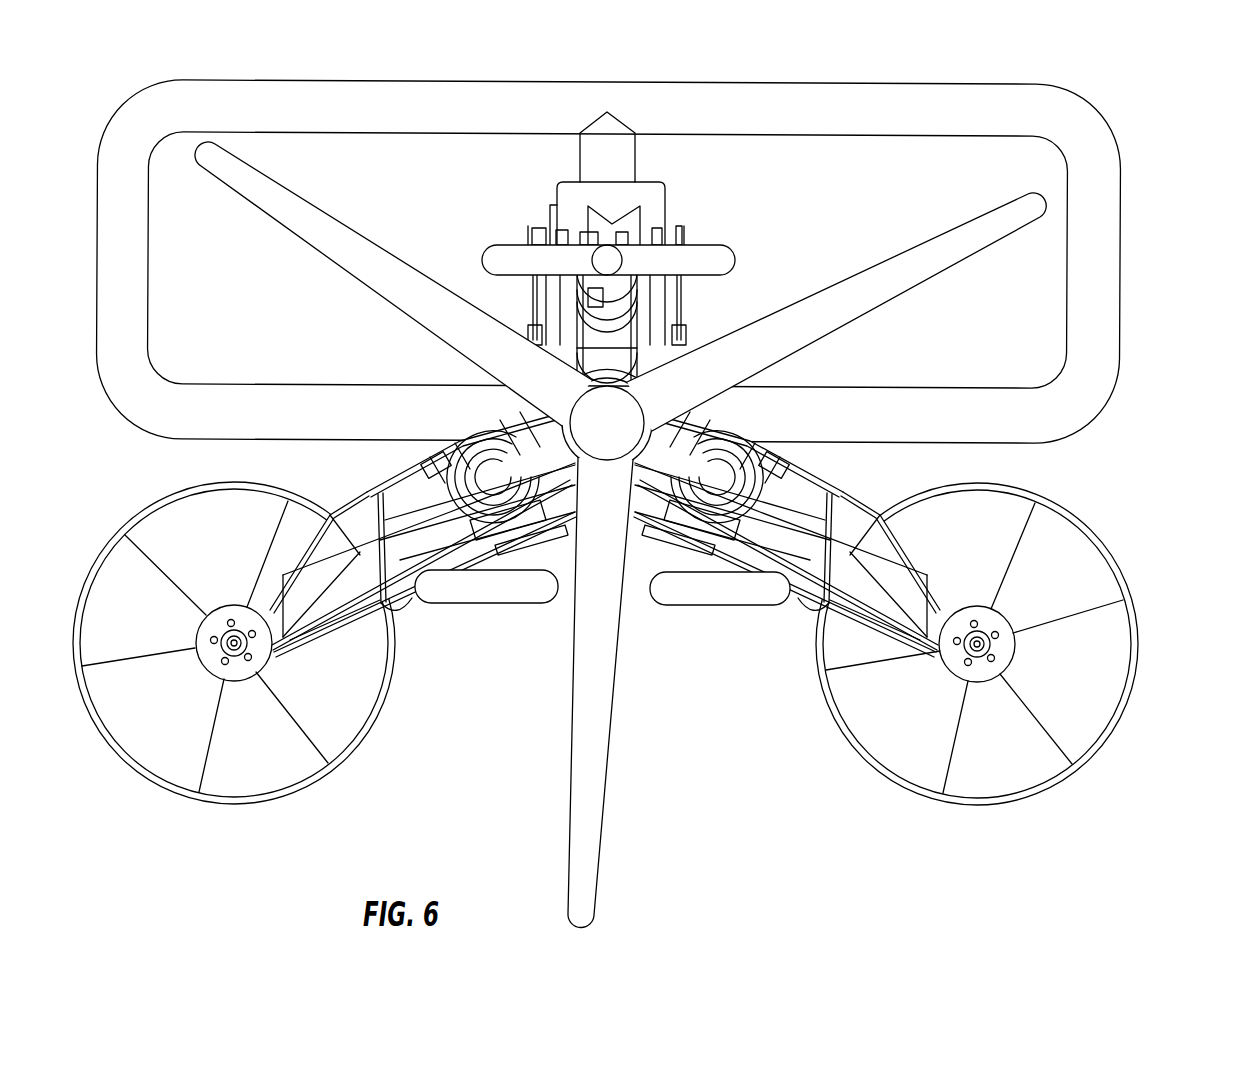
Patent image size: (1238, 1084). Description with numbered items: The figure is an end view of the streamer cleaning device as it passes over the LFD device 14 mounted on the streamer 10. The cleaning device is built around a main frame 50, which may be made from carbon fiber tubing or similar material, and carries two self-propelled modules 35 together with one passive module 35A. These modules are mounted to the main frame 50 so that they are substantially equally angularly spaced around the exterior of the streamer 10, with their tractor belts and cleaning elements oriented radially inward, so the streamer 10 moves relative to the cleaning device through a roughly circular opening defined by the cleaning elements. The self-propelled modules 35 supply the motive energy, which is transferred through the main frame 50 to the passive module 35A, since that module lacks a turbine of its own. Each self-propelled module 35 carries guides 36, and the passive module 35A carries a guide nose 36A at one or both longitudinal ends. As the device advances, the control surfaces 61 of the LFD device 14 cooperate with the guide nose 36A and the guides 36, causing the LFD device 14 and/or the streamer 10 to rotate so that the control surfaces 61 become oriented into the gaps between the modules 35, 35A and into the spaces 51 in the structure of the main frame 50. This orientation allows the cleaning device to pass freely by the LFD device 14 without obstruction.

The streamer 10 is at (592, 438).
The LFD device 14 is at (620, 535).
The self-propelled module 35 is at (381, 714).
The passive module 35A is at (677, 313).
The guide 36 is at (486, 606).
The guide nose 36A is at (736, 262).
The main frame 50 is at (1111, 251).
The spaces 51 is at (366, 176).
The control surfaces 61 is at (327, 226).